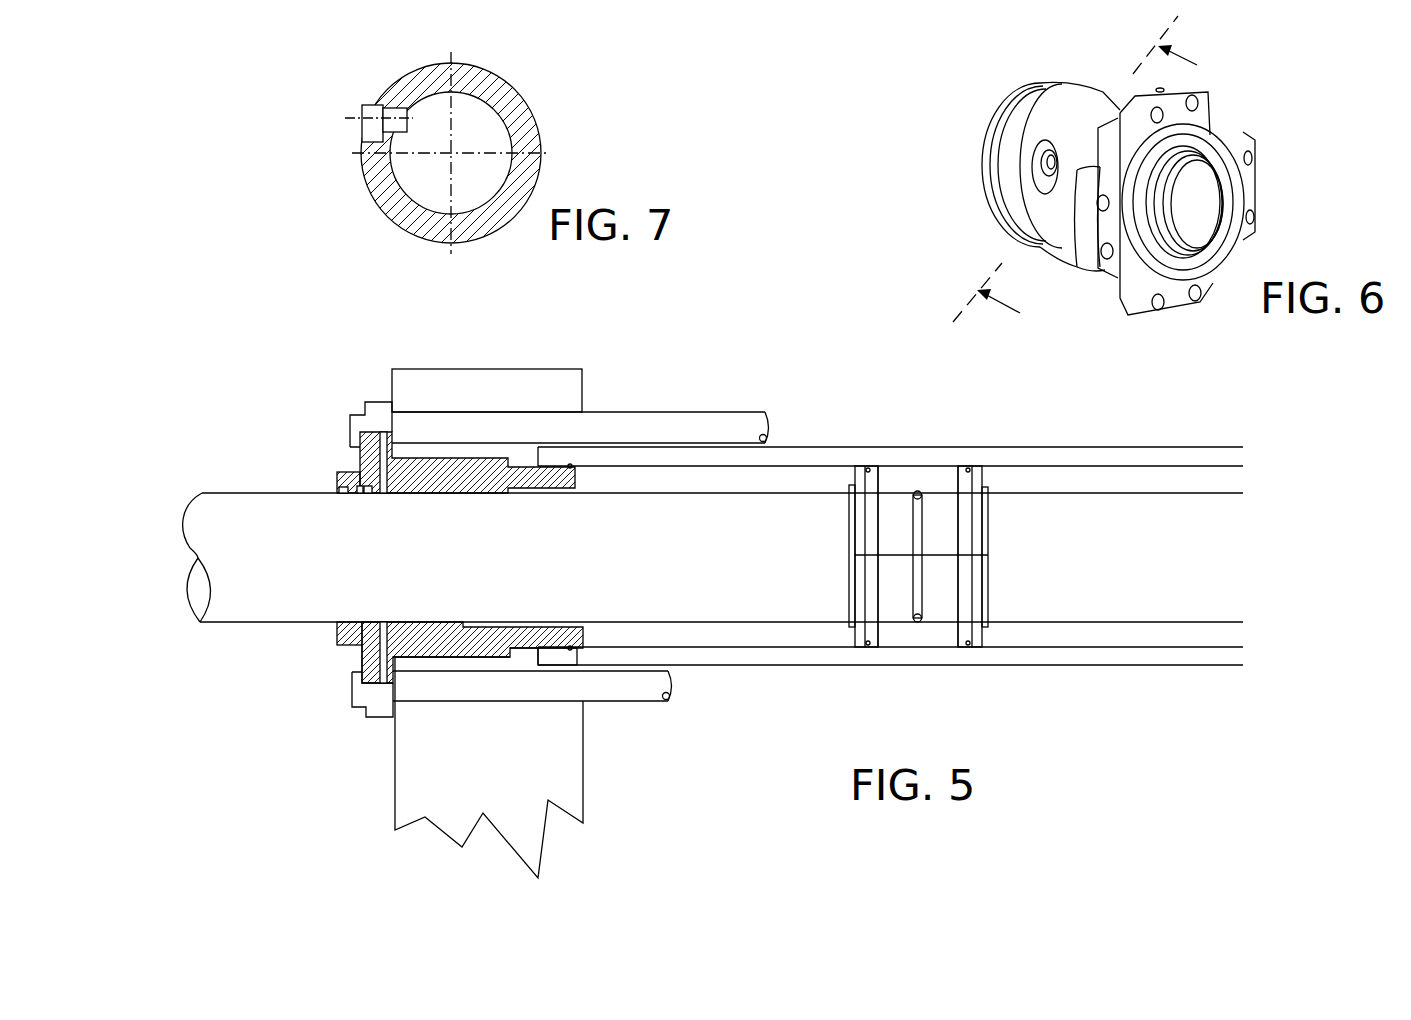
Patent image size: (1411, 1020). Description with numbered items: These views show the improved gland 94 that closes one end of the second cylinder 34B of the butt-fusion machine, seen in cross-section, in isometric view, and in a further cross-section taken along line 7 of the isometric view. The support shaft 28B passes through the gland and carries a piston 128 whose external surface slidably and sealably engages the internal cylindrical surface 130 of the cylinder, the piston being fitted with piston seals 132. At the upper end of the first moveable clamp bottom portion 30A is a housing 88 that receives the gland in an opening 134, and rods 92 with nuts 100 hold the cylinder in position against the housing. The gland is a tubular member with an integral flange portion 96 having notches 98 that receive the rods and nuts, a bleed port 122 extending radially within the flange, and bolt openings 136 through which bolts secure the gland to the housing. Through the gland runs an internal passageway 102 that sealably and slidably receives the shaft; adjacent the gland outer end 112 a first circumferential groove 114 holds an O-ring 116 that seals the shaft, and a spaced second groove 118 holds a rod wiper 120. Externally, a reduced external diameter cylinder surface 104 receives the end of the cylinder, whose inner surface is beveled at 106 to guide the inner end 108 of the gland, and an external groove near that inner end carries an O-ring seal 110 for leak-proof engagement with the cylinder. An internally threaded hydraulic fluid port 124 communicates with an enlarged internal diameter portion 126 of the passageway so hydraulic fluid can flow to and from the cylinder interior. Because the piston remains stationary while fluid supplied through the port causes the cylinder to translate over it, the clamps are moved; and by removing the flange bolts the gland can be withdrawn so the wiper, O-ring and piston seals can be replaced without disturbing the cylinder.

In FIG. 6, the section line 7— 7 is at (1078, 177).
In FIG. 5, the support shaft 28B is at (267, 600).
In FIG. 5, the first moveable clamp bottom portion 30A is at (400, 797).
In FIG. 5, the second cylinder 34B is at (1067, 450).
In FIG. 5, the housing 88 is at (541, 371).
In FIG. 5, the rods 92 is at (692, 420).
In FIG. 7, the gland 94 is at (533, 98).
In FIG. 6, the gland 94 is at (1303, 117).
In FIG. 5, the flange portion 96 is at (362, 657).
In FIG. 6, the flange portion 96 is at (1205, 108).
In FIG. 6, the notches 98 is at (1242, 128).
In FIG. 5, the nuts 100 is at (378, 403).
In FIG. 5, the internal passageway 102 is at (427, 620).
In FIG. 5, the reduced external diameter cylinder surface 104 is at (569, 465).
In FIG. 5, the bevel 106 is at (528, 650).
In FIG. 5, the inner end 108 is at (583, 638).
In FIG. 5, the O-ring seal 110 is at (578, 660).
In FIG. 5, the gland outer end 112 is at (337, 480).
In FIG. 5, the first circumferential groove 114 is at (367, 493).
In FIG. 5, the O-ring 116 is at (366, 493).
In FIG. 5, the second groove 118 is at (343, 493).
In FIG. 5, the rod wiper 120 is at (347, 620).
In FIG. 5, the bleed port 122 is at (385, 432).
In FIG. 6, the bleed port 122 is at (1162, 90).
In FIG. 7, the hydraulic fluid port 124 is at (363, 122).
In FIG. 6, the hydraulic fluid port 124 is at (1030, 165).
In FIG. 5, the enlarged internal diameter portion 126 is at (503, 493).
In FIG. 5, the piston 128 is at (962, 527).
In FIG. 5, the internal cylindrical surface 130 is at (906, 472).
In FIG. 5, the piston seals 132 is at (872, 468).
In FIG. 5, the opening 134 is at (440, 655).
In FIG. 6, the bolt openings 136 is at (1256, 216).